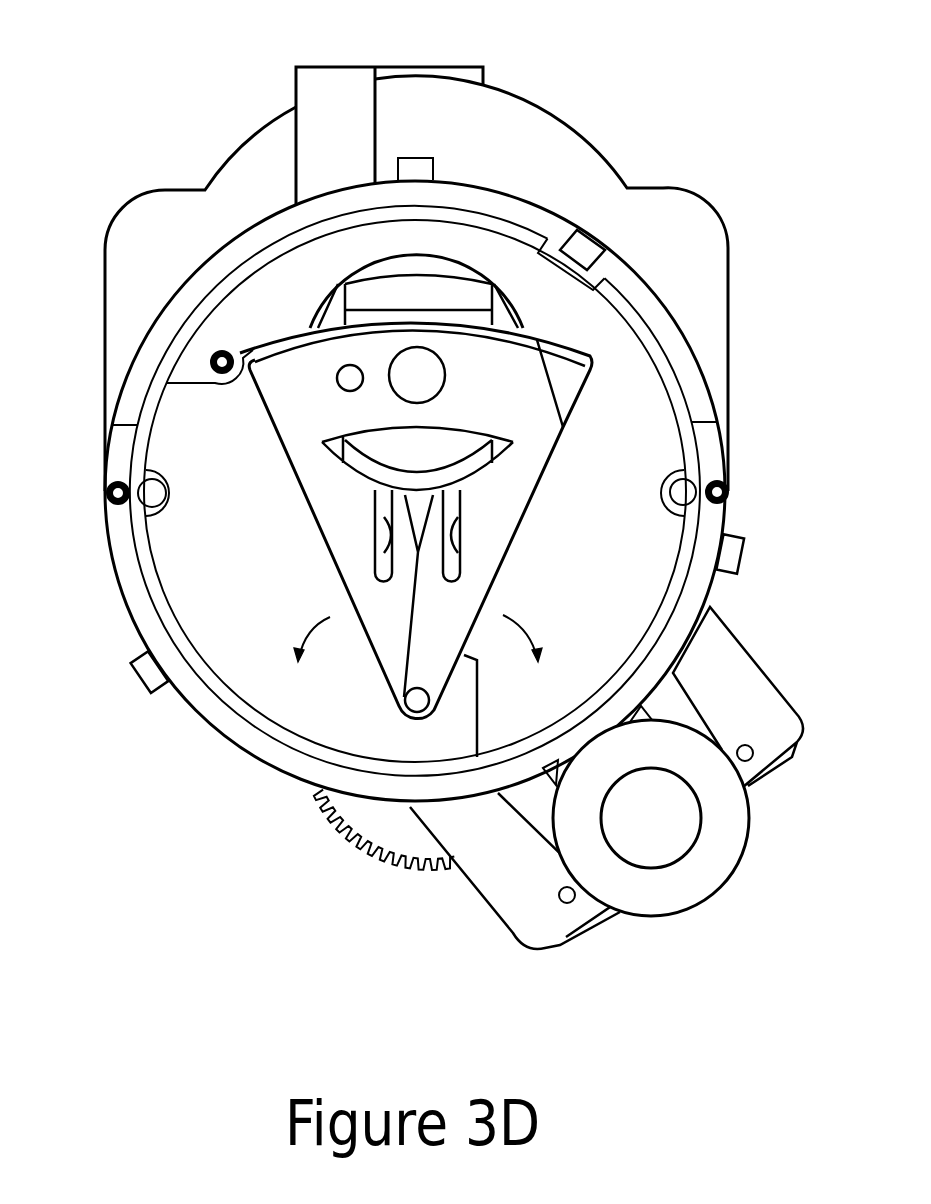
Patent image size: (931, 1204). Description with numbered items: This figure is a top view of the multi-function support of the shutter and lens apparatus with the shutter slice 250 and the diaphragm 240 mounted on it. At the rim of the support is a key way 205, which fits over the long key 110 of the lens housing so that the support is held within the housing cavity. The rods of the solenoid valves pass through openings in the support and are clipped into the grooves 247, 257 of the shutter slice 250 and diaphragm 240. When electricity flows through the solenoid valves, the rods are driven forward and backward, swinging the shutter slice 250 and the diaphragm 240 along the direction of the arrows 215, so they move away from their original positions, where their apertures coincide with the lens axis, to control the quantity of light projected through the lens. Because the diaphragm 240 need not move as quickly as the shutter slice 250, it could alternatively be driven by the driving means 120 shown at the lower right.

The long key 110 is at (585, 245).
The key way 205 is at (588, 280).
The diaphragm 240 is at (507, 373).
The shutter slice 250 is at (317, 482).
The groove 257 is at (383, 552).
The groove 247 is at (455, 550).
The arrows 215 is at (175, 795).
The driving means 120 is at (663, 827).